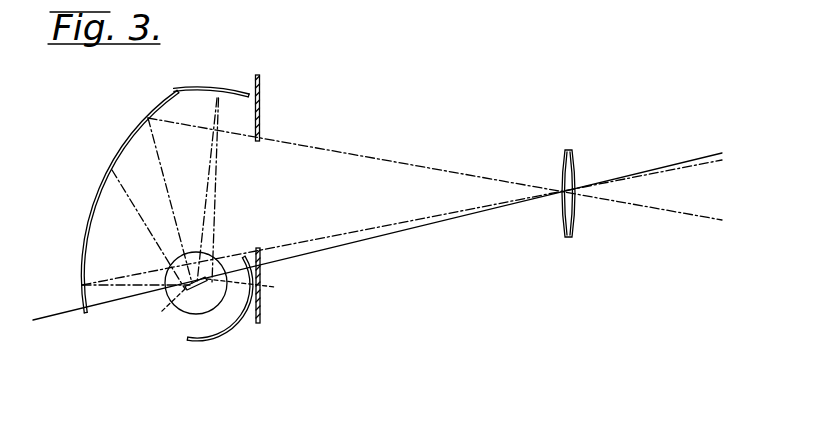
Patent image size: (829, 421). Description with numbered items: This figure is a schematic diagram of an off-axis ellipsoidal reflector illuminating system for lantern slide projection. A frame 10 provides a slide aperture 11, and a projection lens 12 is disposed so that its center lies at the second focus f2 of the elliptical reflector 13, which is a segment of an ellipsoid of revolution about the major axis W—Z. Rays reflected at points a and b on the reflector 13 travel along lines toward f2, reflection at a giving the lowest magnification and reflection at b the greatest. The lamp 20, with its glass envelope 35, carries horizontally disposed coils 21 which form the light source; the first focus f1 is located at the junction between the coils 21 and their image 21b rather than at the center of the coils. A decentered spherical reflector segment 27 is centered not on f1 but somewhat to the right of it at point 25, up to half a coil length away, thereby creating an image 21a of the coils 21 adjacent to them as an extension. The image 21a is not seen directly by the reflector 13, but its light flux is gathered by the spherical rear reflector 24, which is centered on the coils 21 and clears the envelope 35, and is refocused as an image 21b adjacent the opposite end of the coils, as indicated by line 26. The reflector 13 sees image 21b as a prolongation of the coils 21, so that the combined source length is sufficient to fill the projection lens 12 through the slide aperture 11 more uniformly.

The elliptical reflector 13 is at (120, 148).
The spherical reflector segment 27 is at (207, 90).
The frame 10 is at (260, 110).
The slide aperture 11 is at (258, 157).
The reflection point a is at (150, 118).
The reflection point b is at (82, 284).
The line 26 is at (133, 218).
The major axis end W is at (365, 245).
The major axis end Z is at (742, 155).
The lamp 20 is at (166, 320).
The lamp coils 21 is at (207, 277).
The coil image 21a is at (259, 290).
The coil image 21b is at (151, 311).
The first focus f1 is at (195, 287).
The glass envelope 35 is at (166, 278).
The spherical rear reflector 24 is at (232, 331).
The center point 25 is at (208, 279).
The projection lens 12 is at (571, 160).
The second focus f2 is at (571, 190).